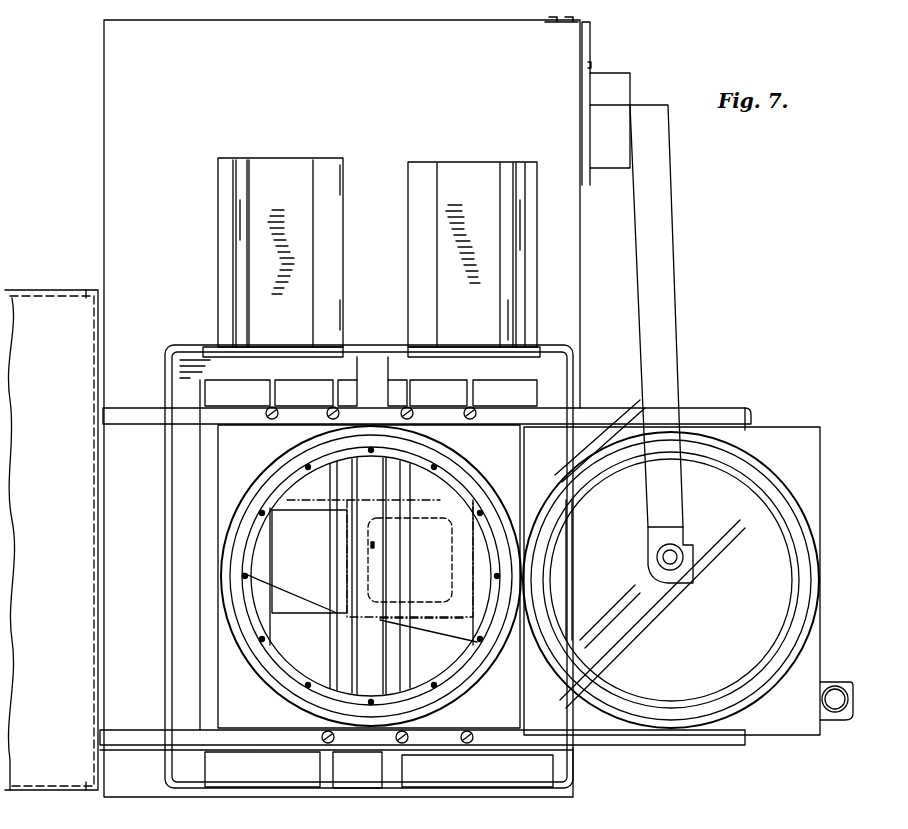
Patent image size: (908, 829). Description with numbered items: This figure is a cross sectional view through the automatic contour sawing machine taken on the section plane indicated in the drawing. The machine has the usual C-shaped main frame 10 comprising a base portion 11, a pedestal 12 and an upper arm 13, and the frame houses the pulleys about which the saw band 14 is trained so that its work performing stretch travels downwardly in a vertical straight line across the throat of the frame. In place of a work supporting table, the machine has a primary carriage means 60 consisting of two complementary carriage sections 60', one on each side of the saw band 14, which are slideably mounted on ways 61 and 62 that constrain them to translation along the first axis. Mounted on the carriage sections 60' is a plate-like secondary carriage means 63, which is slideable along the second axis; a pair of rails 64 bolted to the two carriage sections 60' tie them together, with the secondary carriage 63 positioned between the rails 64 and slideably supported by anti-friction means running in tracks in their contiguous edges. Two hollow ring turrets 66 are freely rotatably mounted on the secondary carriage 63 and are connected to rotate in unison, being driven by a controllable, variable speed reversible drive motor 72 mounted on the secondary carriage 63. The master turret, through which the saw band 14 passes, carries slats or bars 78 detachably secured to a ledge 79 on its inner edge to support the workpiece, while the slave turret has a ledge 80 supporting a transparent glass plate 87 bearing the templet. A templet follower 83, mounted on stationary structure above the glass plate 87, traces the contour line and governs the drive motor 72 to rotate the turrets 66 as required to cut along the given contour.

The main frame 10 is at (45, 265).
The base portion 11 is at (387, 117).
The pedestal 12 is at (100, 342).
The upper arm 13 is at (205, 500).
The saw band 14 is at (375, 548).
The primary carriage means 60 is at (335, 321).
The carriage section 60' is at (371, 548).
The way 61 is at (410, 238).
The way 62 is at (226, 213).
The secondary carriage means 63 is at (192, 632).
The rail 64 is at (588, 420).
The turret 66 is at (748, 470).
The drive motor 72 is at (838, 683).
The slat 78 is at (309, 561).
The ledge 79 is at (425, 462).
The ledge 80 is at (778, 512).
The templet follower 83 is at (665, 594).
The transparent glass plate 87 is at (785, 556).